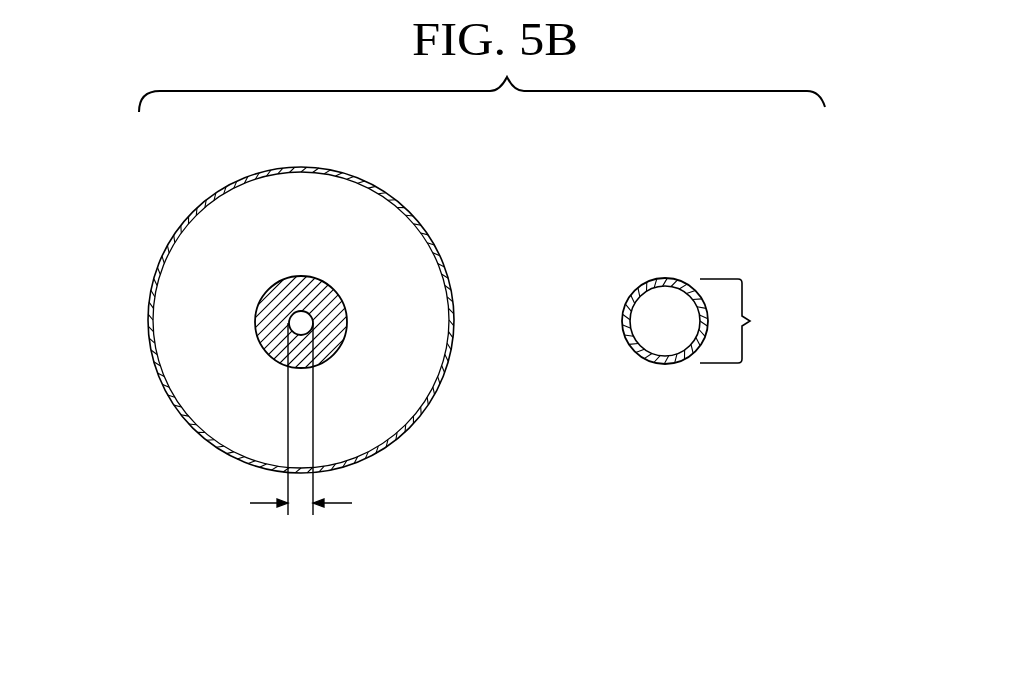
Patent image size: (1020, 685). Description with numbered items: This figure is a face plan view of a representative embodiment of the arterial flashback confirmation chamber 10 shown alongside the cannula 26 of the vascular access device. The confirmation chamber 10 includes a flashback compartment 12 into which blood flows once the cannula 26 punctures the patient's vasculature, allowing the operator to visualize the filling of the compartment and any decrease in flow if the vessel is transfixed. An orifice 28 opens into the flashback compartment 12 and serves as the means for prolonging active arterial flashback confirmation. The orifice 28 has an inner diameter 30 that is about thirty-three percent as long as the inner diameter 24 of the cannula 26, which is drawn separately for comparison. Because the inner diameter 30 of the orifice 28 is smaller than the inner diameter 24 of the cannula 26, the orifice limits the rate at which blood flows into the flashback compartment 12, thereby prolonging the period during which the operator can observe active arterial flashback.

The arterial flashback confirmation chamber 10 is at (430, 207).
The flashback compartment 12 is at (400, 432).
The orifice 28 is at (347, 313).
The inner diameter 30 is at (303, 507).
The cannula 26 is at (657, 278).
The inner diameter 24 is at (741, 321).